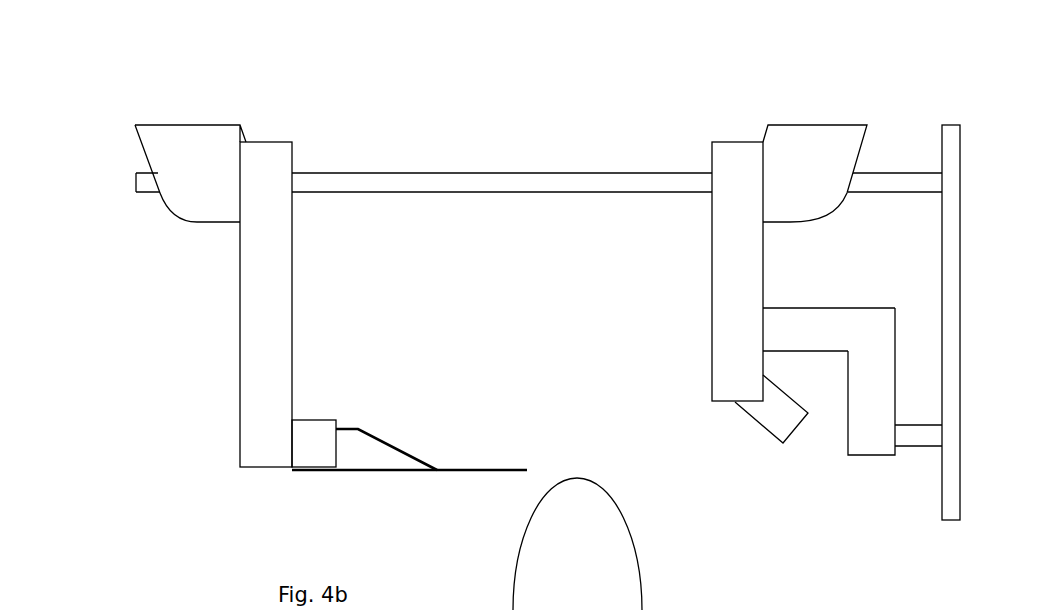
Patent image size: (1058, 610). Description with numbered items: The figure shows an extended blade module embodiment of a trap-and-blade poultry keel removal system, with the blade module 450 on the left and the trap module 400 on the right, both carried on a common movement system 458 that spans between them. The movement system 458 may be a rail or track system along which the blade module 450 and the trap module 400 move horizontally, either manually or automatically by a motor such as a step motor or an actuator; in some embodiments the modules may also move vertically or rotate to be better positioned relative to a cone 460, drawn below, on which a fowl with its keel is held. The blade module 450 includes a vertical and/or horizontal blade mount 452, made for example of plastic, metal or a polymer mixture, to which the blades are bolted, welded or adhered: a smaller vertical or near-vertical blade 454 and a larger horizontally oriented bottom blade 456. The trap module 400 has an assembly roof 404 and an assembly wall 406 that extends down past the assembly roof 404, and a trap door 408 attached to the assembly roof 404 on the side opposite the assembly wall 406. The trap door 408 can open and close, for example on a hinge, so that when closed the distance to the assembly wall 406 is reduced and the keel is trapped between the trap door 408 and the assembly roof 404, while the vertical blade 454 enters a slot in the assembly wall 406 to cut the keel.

The trap module 400 is at (760, 98).
The assembly roof 404 is at (887, 382).
The assembly wall 406 is at (795, 350).
The trap door 408 is at (768, 420).
The blade module 450 is at (137, 75).
The blade mount 452 is at (248, 400).
The vertical blade 454 is at (373, 451).
The bottom blade 456 is at (420, 474).
The movement system 458 is at (443, 184).
The cone 460 is at (615, 538).